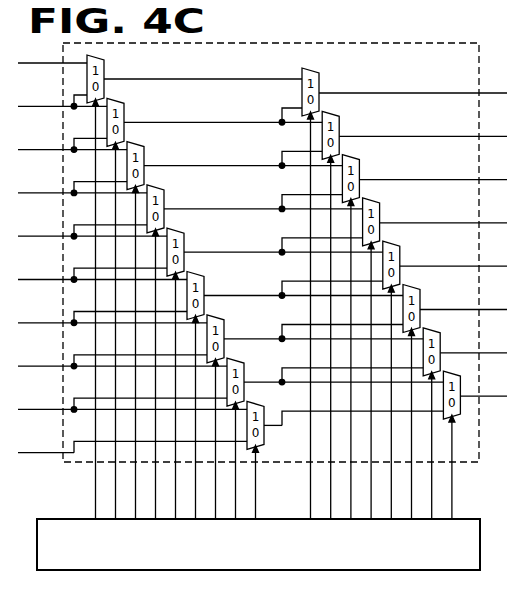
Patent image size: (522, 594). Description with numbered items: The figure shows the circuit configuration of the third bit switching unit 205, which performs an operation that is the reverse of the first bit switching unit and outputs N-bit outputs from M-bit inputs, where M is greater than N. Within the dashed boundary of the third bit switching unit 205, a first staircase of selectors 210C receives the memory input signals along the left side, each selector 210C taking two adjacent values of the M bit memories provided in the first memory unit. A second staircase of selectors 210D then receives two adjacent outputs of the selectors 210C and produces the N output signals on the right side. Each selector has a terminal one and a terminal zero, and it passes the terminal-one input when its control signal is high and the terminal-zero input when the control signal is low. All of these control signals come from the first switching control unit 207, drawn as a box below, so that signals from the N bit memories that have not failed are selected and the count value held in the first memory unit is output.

The third bit switching unit 205 is at (261, 281).
The first switching control unit 207 is at (65, 518).
The selectors 210C is at (105, 62).
The selectors 210D is at (320, 74).